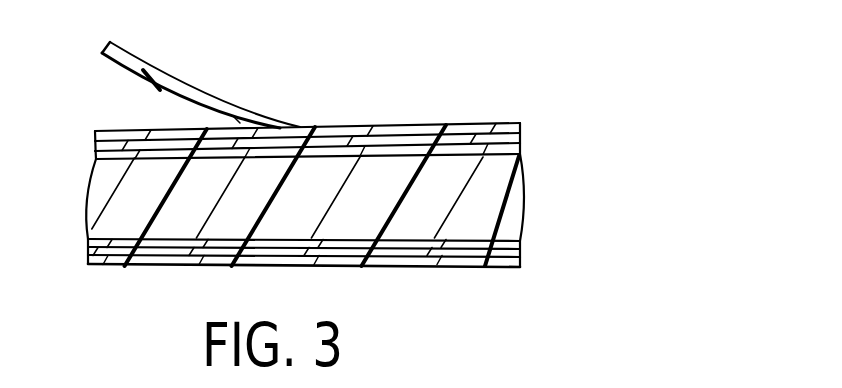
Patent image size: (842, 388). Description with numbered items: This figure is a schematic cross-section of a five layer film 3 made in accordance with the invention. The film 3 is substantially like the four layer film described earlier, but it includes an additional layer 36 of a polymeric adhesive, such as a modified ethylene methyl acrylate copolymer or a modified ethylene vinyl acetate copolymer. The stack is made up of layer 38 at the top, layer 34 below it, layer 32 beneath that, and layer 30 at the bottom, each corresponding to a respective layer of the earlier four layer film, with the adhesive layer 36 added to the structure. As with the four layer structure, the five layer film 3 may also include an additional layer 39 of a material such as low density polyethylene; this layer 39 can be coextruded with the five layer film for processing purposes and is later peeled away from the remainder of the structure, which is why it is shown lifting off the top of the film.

The five layer film 3 is at (458, 80).
The layer 30 is at (522, 262).
The layer 32 is at (89, 240).
The layer 34 is at (524, 210).
The layer of polymeric adhesive 36 is at (522, 152).
The layer 38 is at (96, 133).
The additional layer 39 is at (130, 77).